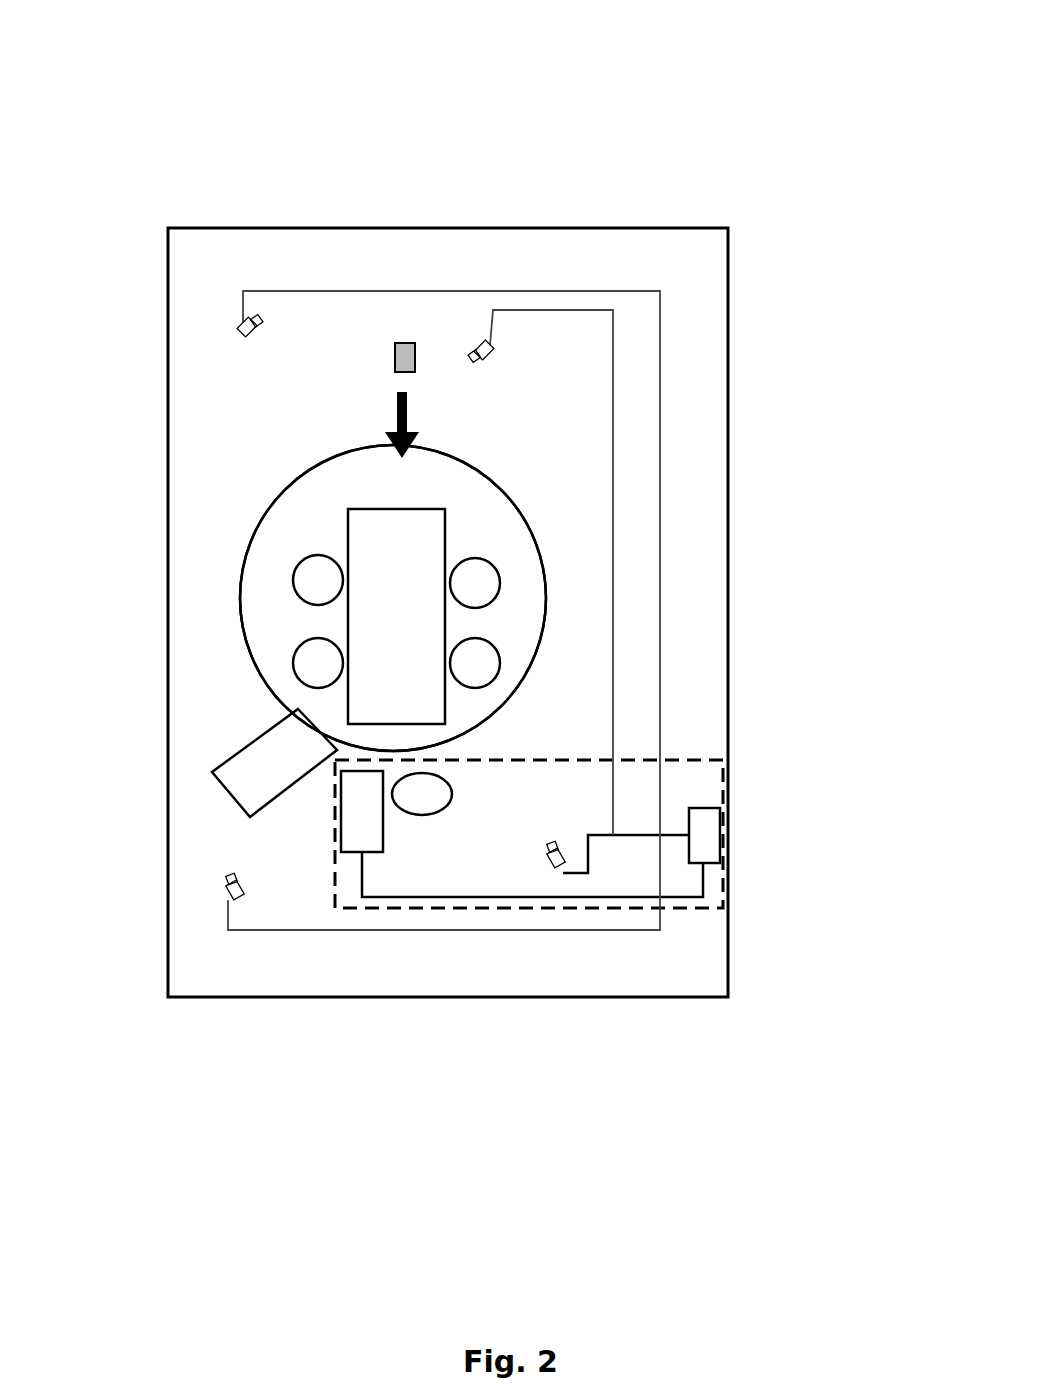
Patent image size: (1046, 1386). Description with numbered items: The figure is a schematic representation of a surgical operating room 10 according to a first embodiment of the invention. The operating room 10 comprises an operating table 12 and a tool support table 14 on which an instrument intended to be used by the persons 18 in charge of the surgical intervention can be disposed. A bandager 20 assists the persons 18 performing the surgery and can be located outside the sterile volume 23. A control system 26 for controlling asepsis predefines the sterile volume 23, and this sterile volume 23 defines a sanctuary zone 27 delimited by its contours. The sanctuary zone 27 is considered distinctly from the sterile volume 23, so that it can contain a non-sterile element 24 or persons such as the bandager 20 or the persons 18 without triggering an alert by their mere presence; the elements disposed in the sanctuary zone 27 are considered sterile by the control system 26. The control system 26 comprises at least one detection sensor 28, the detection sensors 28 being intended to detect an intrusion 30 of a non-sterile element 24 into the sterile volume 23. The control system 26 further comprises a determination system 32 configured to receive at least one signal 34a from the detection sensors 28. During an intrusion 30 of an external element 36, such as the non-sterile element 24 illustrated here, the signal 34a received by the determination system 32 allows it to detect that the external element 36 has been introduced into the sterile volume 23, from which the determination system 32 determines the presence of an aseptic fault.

The surgical operating room 10 is at (645, 226).
The operating table 12 is at (438, 553).
The tool support table 14 is at (228, 790).
The person 18 is at (294, 657).
The bandager 20 is at (452, 787).
The sterile volume 23 is at (276, 527).
The non-sterile element 24 is at (400, 342).
The control system 26 is at (564, 761).
The sanctuary zone 27 is at (333, 490).
The detection sensor 28 is at (244, 320).
The intrusion 30 is at (420, 413).
The determination system 32 is at (714, 866).
The signal 34a is at (607, 318).
The external element 36 is at (405, 342).